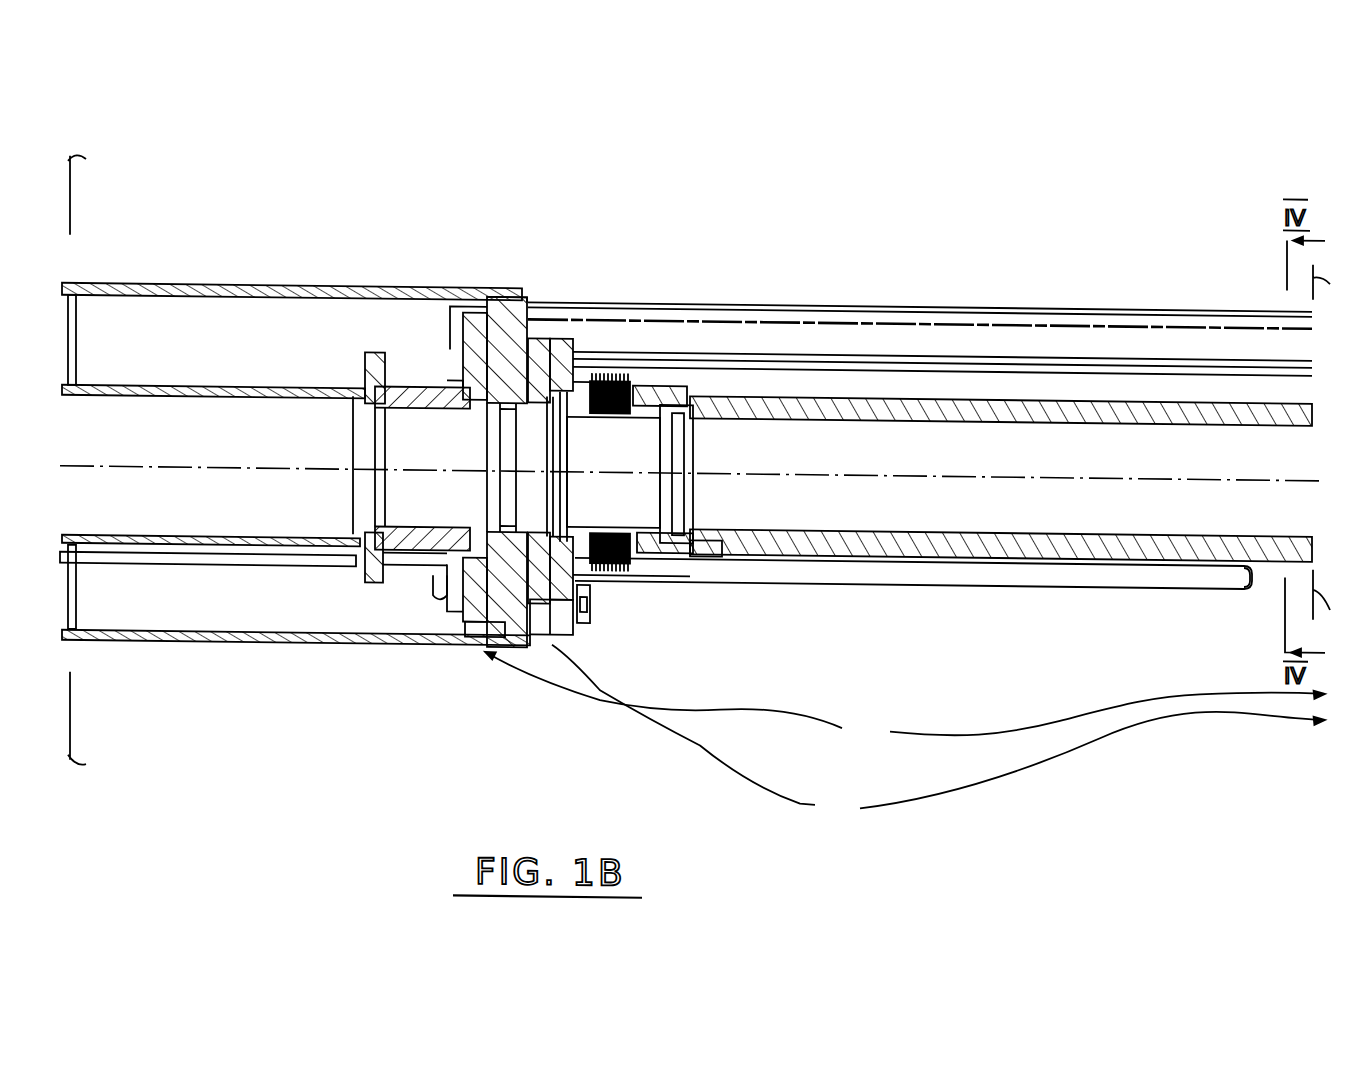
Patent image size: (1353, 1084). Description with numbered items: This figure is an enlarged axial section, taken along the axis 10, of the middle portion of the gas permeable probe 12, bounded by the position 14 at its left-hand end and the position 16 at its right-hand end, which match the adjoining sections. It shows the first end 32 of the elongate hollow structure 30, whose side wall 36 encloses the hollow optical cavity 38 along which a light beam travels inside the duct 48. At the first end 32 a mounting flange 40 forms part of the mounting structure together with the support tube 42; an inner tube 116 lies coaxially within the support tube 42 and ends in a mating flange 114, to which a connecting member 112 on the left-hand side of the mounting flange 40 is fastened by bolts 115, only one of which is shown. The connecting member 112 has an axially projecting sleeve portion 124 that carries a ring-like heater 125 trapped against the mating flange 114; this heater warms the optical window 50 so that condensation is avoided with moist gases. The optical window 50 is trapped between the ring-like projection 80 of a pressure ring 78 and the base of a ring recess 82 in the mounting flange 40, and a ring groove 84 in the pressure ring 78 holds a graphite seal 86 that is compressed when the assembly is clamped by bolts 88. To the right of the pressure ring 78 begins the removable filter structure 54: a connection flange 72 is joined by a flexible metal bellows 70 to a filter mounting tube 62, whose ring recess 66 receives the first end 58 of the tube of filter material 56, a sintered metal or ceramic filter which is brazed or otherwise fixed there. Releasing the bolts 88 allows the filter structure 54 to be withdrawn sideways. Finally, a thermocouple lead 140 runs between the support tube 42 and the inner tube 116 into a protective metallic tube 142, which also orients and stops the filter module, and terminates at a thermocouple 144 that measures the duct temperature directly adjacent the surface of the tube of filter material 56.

The axis 10 is at (822, 468).
The gas permeable probe 12 is at (975, 592).
The position 14 is at (102, 469).
The position 16 is at (1333, 442).
The elongate hollow structure 30 is at (938, 737).
The first end 32 is at (493, 272).
The side wall 36 is at (905, 384).
The hollow optical cavity 38 is at (1070, 431).
The mounting flange 40 is at (522, 290).
The support tube 42 is at (185, 284).
The duct 48 is at (880, 224).
The optical window 50 is at (500, 464).
The filter structure 54 is at (905, 703).
The tube of filter material 56 is at (945, 521).
The first end 58 is at (697, 519).
The filter mounting tube 62 is at (672, 552).
The ring recess 66 is at (724, 541).
The flexible metal bellows 70 is at (608, 564).
The connection flange 72 is at (556, 630).
The pressure ring 78 is at (537, 649).
The ring-like projection 80 is at (508, 519).
The ring recess 82 is at (500, 514).
The ring groove 84 is at (540, 334).
The graphite seal 86 is at (576, 368).
The bolts 88 is at (582, 623).
The connecting member 112 is at (463, 382).
The mating flange 114 is at (362, 364).
The bolts 115 is at (353, 574).
The inner tube 116 is at (163, 391).
The sleeve portion 124 is at (398, 515).
The ring-like heater 125 is at (450, 347).
The thermocouple lead 140 is at (158, 560).
The protective metallic tube 142 is at (1078, 572).
The thermocouple 144 is at (1258, 572).